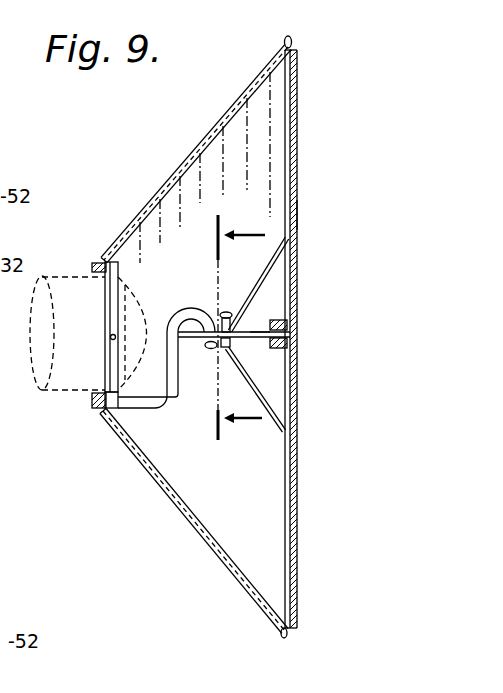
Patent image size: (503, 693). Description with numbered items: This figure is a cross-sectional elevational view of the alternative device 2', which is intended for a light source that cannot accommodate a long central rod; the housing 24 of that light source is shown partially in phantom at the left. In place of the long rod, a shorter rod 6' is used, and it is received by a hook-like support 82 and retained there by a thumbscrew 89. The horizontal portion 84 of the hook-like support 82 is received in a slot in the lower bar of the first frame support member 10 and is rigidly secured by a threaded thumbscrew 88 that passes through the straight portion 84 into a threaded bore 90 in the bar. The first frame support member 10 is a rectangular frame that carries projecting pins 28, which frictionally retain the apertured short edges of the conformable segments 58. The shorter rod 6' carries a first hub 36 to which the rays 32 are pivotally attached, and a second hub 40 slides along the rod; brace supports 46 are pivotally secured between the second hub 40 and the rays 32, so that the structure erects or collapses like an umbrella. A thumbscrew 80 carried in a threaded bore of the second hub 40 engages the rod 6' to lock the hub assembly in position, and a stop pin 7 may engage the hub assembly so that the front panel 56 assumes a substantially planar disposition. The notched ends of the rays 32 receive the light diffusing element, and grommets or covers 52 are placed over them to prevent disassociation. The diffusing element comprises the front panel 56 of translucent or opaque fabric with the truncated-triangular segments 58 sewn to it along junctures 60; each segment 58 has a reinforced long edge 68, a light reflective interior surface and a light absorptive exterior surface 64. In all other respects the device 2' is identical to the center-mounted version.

The light diffusing and directing device 2' is at (342, 90).
The grommets or covers 52 is at (292, 38).
The conformable segments 58 is at (218, 122).
The long edge 68 is at (187, 167).
The rays 32 is at (286, 175).
The front panel 56 is at (292, 213).
The brace supports 46 is at (272, 268).
The shorter rod 6' is at (289, 307).
The first hub 36 is at (297, 326).
The stop pin 7 is at (240, 343).
The second hub 40 is at (235, 342).
The thumbscrew 89 is at (283, 383).
The thumbscrew 80 is at (225, 310).
The hook-like support 82 is at (191, 302).
The horizontal portion 84 is at (155, 412).
The first frame support member 10 is at (103, 254).
The pins 28 is at (95, 266).
The housing 24 is at (65, 368).
The threaded bore 90 is at (100, 417).
The threaded thumbscrew 88 is at (108, 427).
The junctures 60 is at (20, 498).
The exterior surface 64 is at (20, 545).